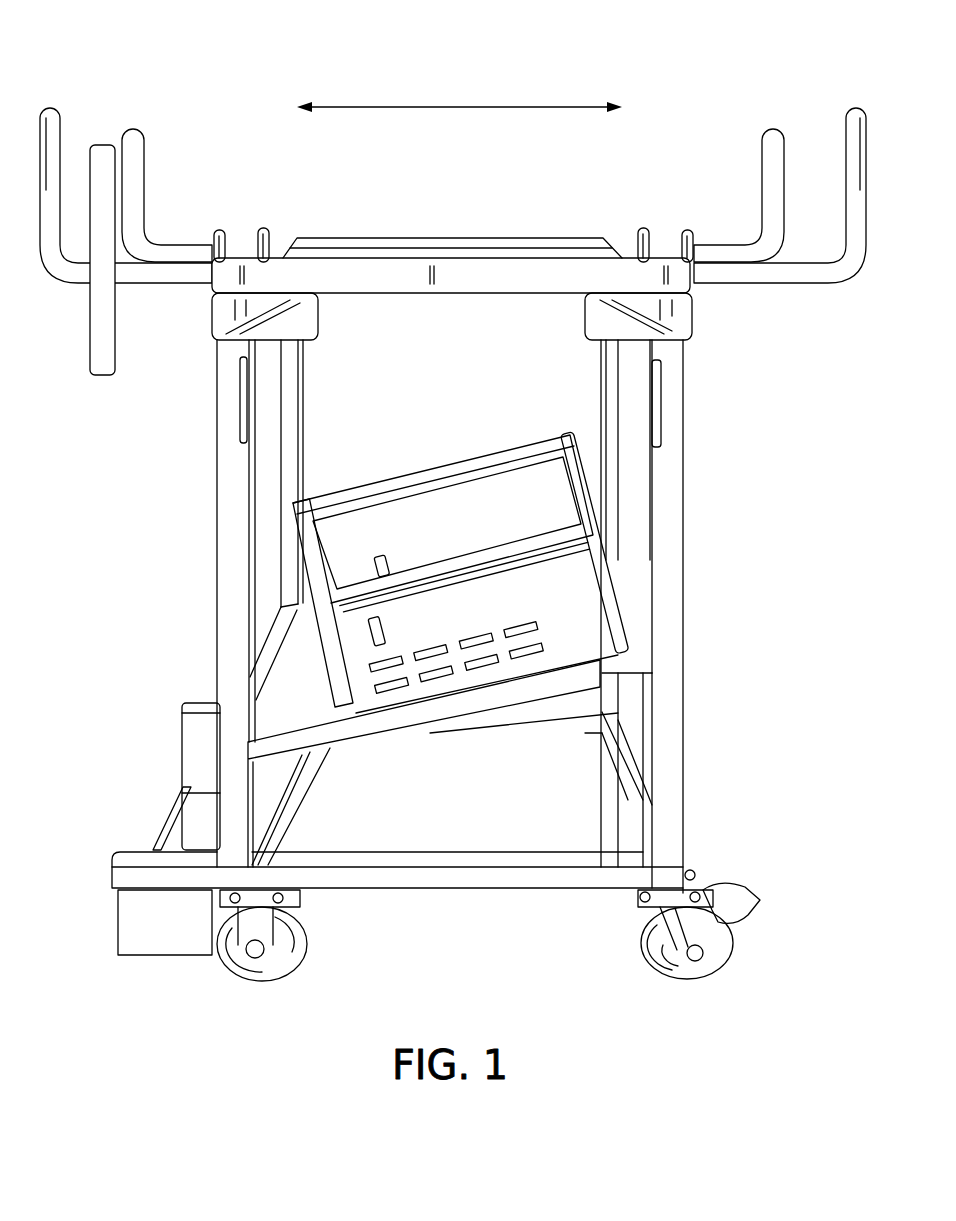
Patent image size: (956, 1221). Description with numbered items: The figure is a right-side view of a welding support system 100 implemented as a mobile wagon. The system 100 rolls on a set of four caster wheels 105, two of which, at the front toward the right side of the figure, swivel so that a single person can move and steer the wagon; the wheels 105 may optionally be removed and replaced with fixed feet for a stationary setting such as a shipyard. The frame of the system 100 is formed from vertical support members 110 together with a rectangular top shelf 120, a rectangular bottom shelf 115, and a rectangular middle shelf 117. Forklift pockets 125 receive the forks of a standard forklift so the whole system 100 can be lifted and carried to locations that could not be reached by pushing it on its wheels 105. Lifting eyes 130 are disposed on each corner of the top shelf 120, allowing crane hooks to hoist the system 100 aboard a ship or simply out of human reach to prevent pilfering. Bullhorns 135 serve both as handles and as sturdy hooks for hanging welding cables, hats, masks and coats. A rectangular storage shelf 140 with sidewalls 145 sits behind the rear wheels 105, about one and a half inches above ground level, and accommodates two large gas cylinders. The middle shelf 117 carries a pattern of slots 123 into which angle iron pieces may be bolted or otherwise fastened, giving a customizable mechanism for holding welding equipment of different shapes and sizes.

The welding support system 100 is at (672, 122).
The caster wheels 105 is at (273, 980).
The vertical support members 110 is at (290, 390).
The bottom shelf 115 is at (534, 789).
The middle shelf 117 is at (499, 609).
The top shelf 120 is at (420, 253).
The slots 123 is at (540, 632).
The forklift pockets 125 is at (230, 342).
The lifting eyes 130 is at (263, 228).
The bullhorns 135 is at (123, 132).
The storage shelf 140 is at (193, 833).
The sidewalls 145 is at (193, 738).